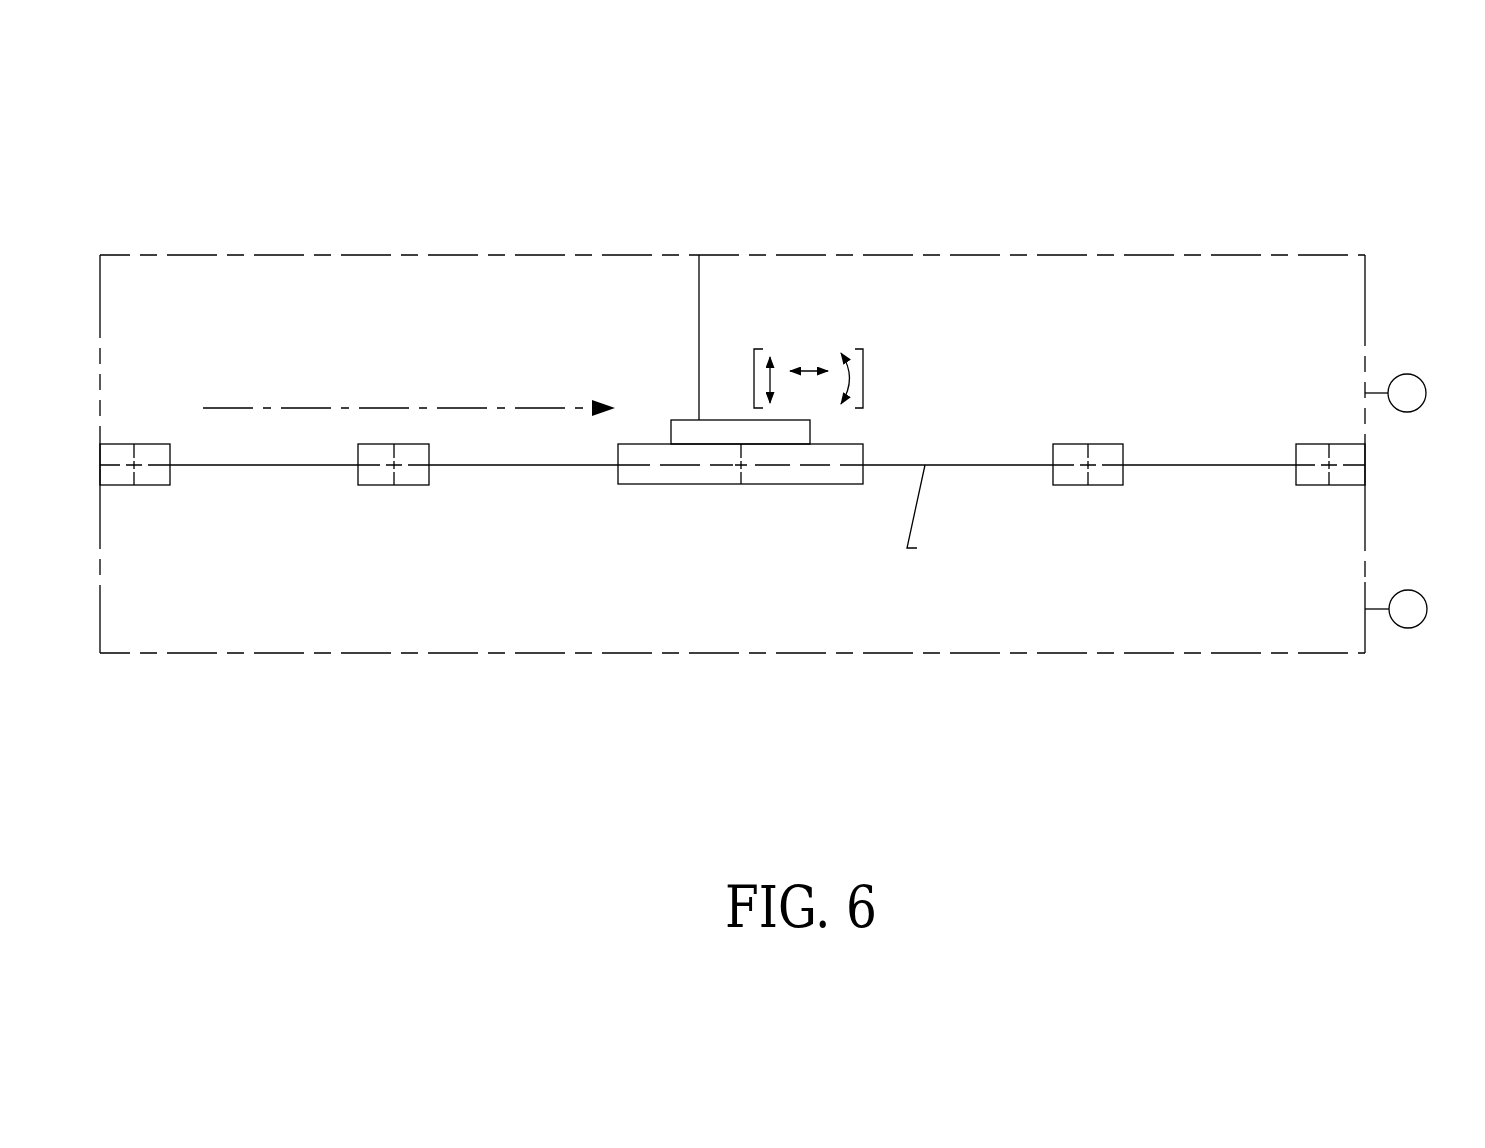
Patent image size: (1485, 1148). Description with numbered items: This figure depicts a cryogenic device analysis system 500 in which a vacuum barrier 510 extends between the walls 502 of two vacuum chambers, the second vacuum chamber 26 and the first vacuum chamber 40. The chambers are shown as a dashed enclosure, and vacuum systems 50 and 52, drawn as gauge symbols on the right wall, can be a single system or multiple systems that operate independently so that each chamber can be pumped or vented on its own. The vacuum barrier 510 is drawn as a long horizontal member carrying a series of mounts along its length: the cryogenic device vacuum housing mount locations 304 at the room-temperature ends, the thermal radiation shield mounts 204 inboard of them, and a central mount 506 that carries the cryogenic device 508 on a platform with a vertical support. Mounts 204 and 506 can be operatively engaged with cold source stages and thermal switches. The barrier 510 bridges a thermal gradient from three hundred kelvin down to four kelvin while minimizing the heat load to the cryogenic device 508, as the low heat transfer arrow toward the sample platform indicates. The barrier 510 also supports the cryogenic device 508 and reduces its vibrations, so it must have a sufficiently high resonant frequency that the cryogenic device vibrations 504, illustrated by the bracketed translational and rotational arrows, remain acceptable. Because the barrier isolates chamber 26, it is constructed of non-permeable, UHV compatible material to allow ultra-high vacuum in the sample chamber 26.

The system 500 is at (1305, 162).
The second vacuum chamber 26 is at (435, 295).
The walls 502 is at (1367, 302).
The first vacuum chamber 40 is at (1203, 611).
The vacuum system 50 is at (1427, 390).
The vacuum system 52 is at (1427, 609).
The cryogenic device vibrations 504 is at (864, 373).
The mount 506 is at (860, 443).
The cryogenic device 508 is at (688, 420).
The vacuum barrier 510 is at (1197, 466).
The thermal radiation shield mount 204 is at (380, 486).
The cryogenic device vacuum housing mount locations 304 is at (123, 486).